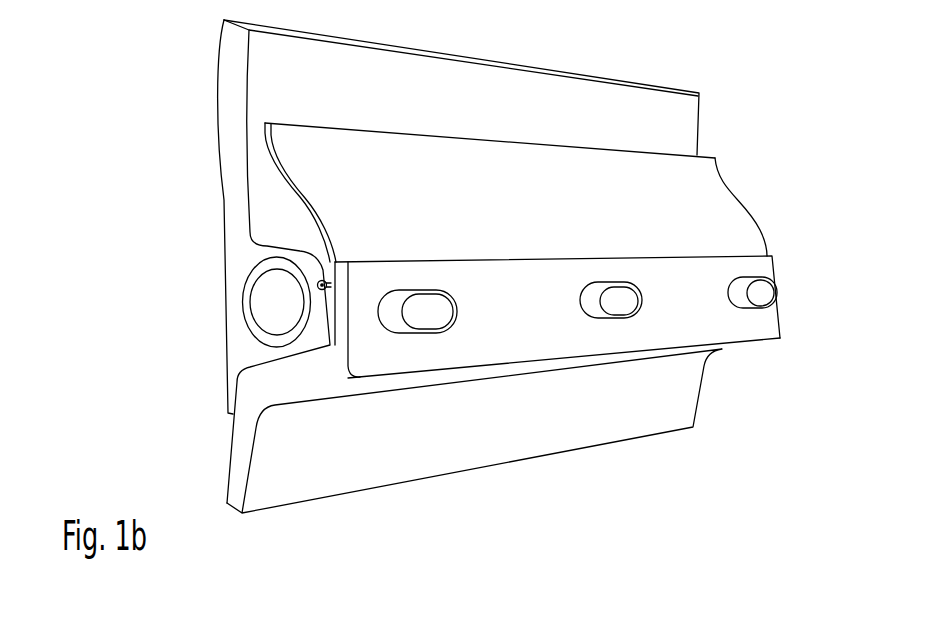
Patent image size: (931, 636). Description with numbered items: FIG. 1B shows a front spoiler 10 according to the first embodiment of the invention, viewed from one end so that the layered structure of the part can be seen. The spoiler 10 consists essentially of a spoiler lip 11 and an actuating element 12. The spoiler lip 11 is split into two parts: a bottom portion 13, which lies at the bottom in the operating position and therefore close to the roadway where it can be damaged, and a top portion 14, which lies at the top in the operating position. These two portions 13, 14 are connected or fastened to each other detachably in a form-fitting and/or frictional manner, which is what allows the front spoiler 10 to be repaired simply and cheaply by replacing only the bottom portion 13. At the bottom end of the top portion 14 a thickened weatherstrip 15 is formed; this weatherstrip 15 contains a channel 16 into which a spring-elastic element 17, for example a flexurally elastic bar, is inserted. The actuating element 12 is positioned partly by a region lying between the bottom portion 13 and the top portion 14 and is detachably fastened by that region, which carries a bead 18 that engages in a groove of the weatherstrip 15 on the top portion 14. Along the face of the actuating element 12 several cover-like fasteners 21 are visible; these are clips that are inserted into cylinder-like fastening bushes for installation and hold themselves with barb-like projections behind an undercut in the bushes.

The front spoiler 10 is at (752, 113).
The spoiler lip 11 is at (143, 232).
The actuating element 12 is at (710, 216).
The bottom portion 13 is at (210, 452).
The top portion 14 is at (217, 246).
The weatherstrip 15 is at (288, 372).
The channel 16 is at (229, 302).
The spring-elastic element 17 is at (244, 304).
The bead 18 is at (325, 281).
The cover-like fasteners 21 is at (430, 313).